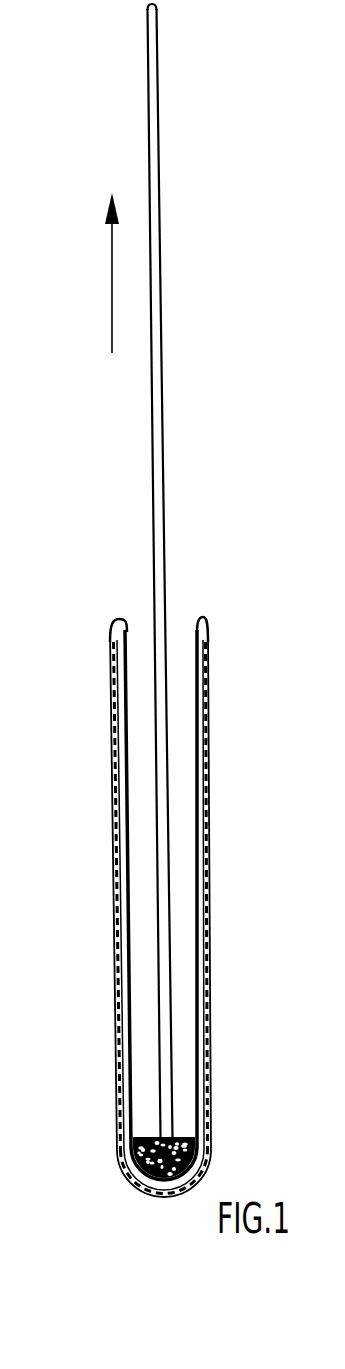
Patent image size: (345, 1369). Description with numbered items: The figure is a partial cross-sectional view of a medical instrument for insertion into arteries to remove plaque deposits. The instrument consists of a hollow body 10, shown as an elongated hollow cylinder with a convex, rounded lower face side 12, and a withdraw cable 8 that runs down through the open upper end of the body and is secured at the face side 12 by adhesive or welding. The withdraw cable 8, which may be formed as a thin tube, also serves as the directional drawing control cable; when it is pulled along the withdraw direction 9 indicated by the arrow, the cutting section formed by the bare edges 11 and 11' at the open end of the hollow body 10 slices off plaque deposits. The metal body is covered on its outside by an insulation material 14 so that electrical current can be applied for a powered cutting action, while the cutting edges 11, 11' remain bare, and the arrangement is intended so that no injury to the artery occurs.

The withdraw cable 8 is at (160, 293).
The withdraw direction 9 is at (105, 273).
The hollow body 10 is at (242, 716).
The cutting section 11 is at (219, 584).
The cutting section 11' is at (105, 591).
The face side 12 is at (140, 1212).
The insulation material 14 is at (117, 921).